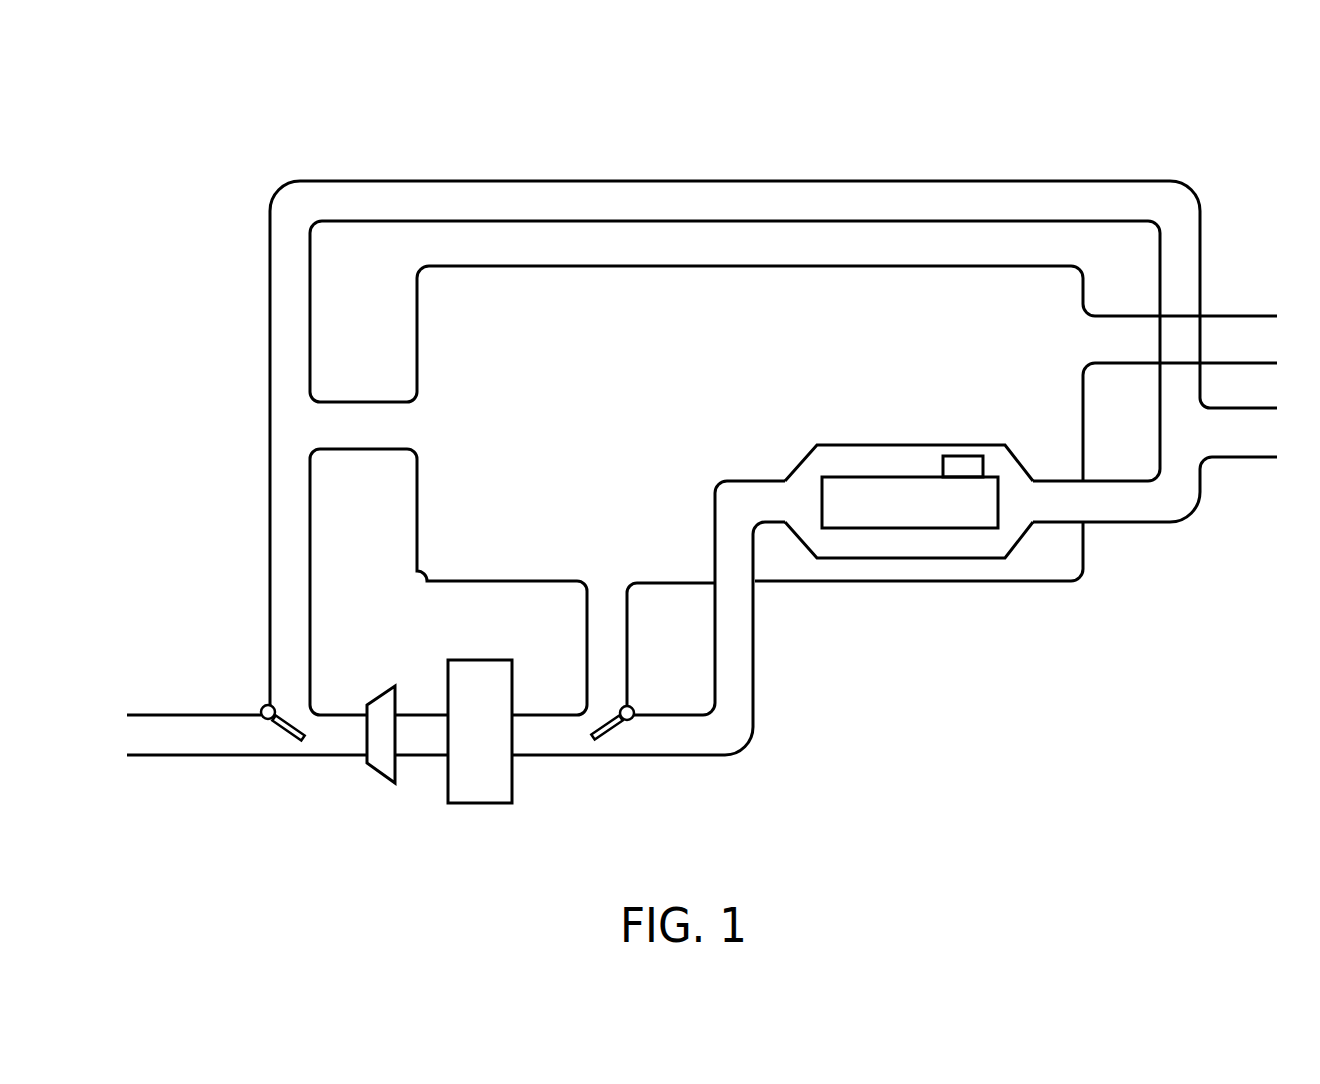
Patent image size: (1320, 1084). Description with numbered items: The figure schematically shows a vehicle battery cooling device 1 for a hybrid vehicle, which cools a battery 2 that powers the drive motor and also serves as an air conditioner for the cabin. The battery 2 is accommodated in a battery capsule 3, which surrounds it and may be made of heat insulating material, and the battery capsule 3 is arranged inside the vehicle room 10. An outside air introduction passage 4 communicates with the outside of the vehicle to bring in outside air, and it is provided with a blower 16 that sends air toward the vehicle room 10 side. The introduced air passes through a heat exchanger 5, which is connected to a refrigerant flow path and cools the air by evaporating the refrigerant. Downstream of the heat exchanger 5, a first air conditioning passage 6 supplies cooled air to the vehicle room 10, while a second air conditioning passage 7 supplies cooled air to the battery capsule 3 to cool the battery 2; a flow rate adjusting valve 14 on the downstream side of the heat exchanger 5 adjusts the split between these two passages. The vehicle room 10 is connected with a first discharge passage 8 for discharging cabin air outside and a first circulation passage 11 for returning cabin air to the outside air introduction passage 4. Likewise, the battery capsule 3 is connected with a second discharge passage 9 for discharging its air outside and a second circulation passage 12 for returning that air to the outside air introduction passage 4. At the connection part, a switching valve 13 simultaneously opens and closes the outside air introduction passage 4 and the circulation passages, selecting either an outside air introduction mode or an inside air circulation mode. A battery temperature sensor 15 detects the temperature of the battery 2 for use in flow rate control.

The vehicle battery cooling device 1 is at (231, 84).
The battery 2 is at (843, 517).
The battery capsule 3 is at (1010, 523).
The outside air introduction passage 4 is at (145, 758).
The heat exchanger 5 is at (477, 803).
The first air conditioning passage 6 is at (627, 633).
The second air conditioning passage 7 is at (755, 650).
The first discharge passage 8 is at (1233, 316).
The second discharge passage 9 is at (1235, 457).
The vehicle room 10 is at (965, 298).
The first circulation passage 11 is at (368, 450).
The second circulation passage 12 is at (525, 181).
The switching valve 13 is at (283, 735).
The flow rate adjusting valve 14 is at (607, 735).
The battery temperature sensor 15 is at (968, 456).
The blower 16 is at (377, 775).